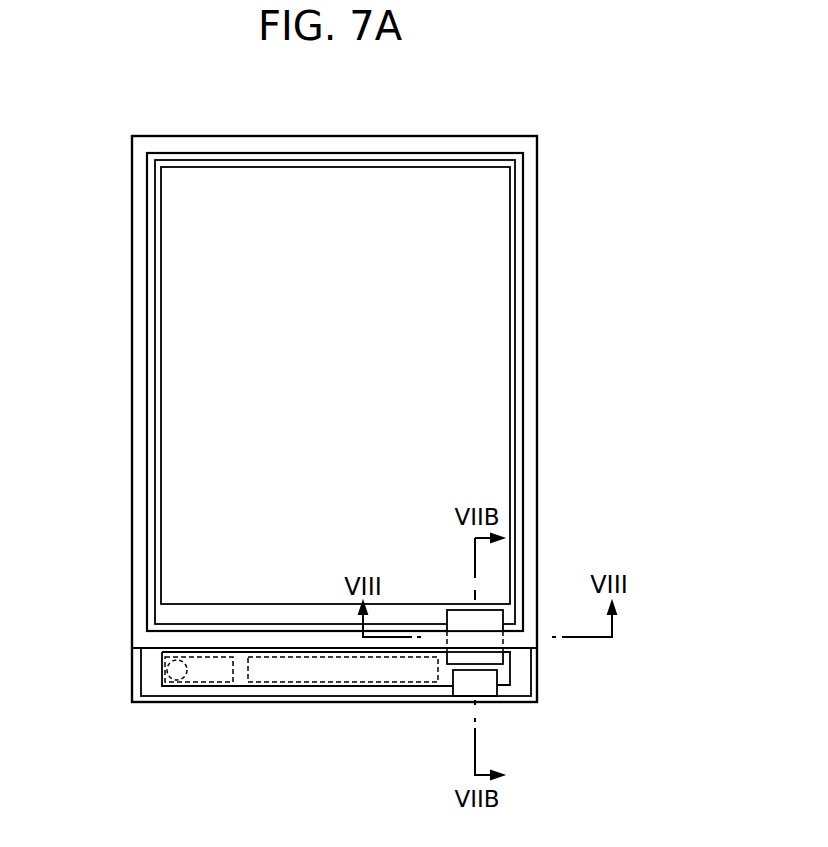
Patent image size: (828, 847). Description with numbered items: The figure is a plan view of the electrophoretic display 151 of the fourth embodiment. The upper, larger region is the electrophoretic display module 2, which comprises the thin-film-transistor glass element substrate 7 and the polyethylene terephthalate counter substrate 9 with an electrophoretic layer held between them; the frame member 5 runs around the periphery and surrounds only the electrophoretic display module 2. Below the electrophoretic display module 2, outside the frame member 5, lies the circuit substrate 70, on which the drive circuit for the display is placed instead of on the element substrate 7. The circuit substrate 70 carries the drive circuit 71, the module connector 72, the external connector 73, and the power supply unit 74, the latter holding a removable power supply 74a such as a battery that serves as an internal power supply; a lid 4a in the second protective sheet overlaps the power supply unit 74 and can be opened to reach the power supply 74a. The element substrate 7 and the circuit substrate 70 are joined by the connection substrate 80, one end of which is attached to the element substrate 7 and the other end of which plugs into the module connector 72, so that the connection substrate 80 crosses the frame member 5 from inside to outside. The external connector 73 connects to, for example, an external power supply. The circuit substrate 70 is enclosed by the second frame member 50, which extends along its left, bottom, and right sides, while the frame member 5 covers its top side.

The electrophoretic display 151 is at (167, 118).
The frame member 5 is at (140, 503).
The electrophoretic display module 2 is at (519, 214).
The element substrate 7 is at (458, 160).
The counter substrate 9 is at (348, 167).
The second frame member 50 is at (533, 688).
The connection substrate 80 is at (500, 609).
The circuit substrate 70 is at (515, 671).
The power supply unit 74 is at (204, 673).
The lid 4a is at (223, 683).
The power supply 74a is at (168, 666).
The drive circuit 71 is at (298, 673).
The module connector 72 is at (452, 662).
The external connector 73 is at (467, 688).